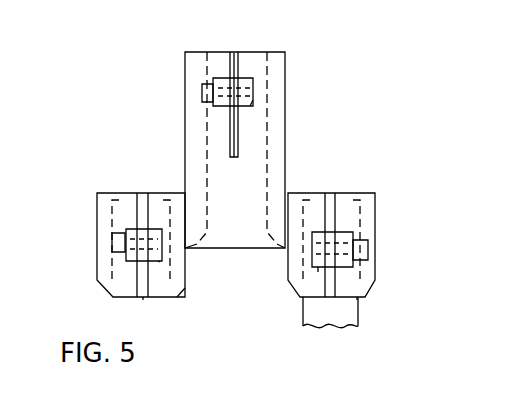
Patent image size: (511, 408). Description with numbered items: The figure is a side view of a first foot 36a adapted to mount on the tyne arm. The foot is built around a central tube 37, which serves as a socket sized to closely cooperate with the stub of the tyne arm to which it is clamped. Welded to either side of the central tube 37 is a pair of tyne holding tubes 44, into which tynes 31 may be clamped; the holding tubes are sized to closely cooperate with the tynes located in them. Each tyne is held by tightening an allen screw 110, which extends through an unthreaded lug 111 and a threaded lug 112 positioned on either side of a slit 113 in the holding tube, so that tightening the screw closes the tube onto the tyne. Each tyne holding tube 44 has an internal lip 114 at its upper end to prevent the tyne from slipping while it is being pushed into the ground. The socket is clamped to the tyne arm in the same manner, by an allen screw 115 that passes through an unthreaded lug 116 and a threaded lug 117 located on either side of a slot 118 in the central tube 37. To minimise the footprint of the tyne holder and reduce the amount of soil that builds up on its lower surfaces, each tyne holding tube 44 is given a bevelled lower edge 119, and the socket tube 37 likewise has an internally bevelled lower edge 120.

The first foot 36a is at (366, 134).
The central tube 37 is at (250, 216).
The tyne holding tube 44 is at (137, 221).
The tyne 31 is at (343, 322).
The allen screw 110 is at (112, 243).
The unthreaded lug 111 is at (120, 280).
The threaded lug 112 is at (160, 262).
The slit 113 is at (143, 297).
The internal lip 114 is at (168, 200).
The allen screw 115 is at (202, 92).
The unthreaded lug 116 is at (218, 105).
The threaded lug 117 is at (250, 106).
The slot 118 is at (234, 53).
The bevelled lower edge 119 is at (100, 290).
The internally bevelled lower edge 120 is at (198, 244).